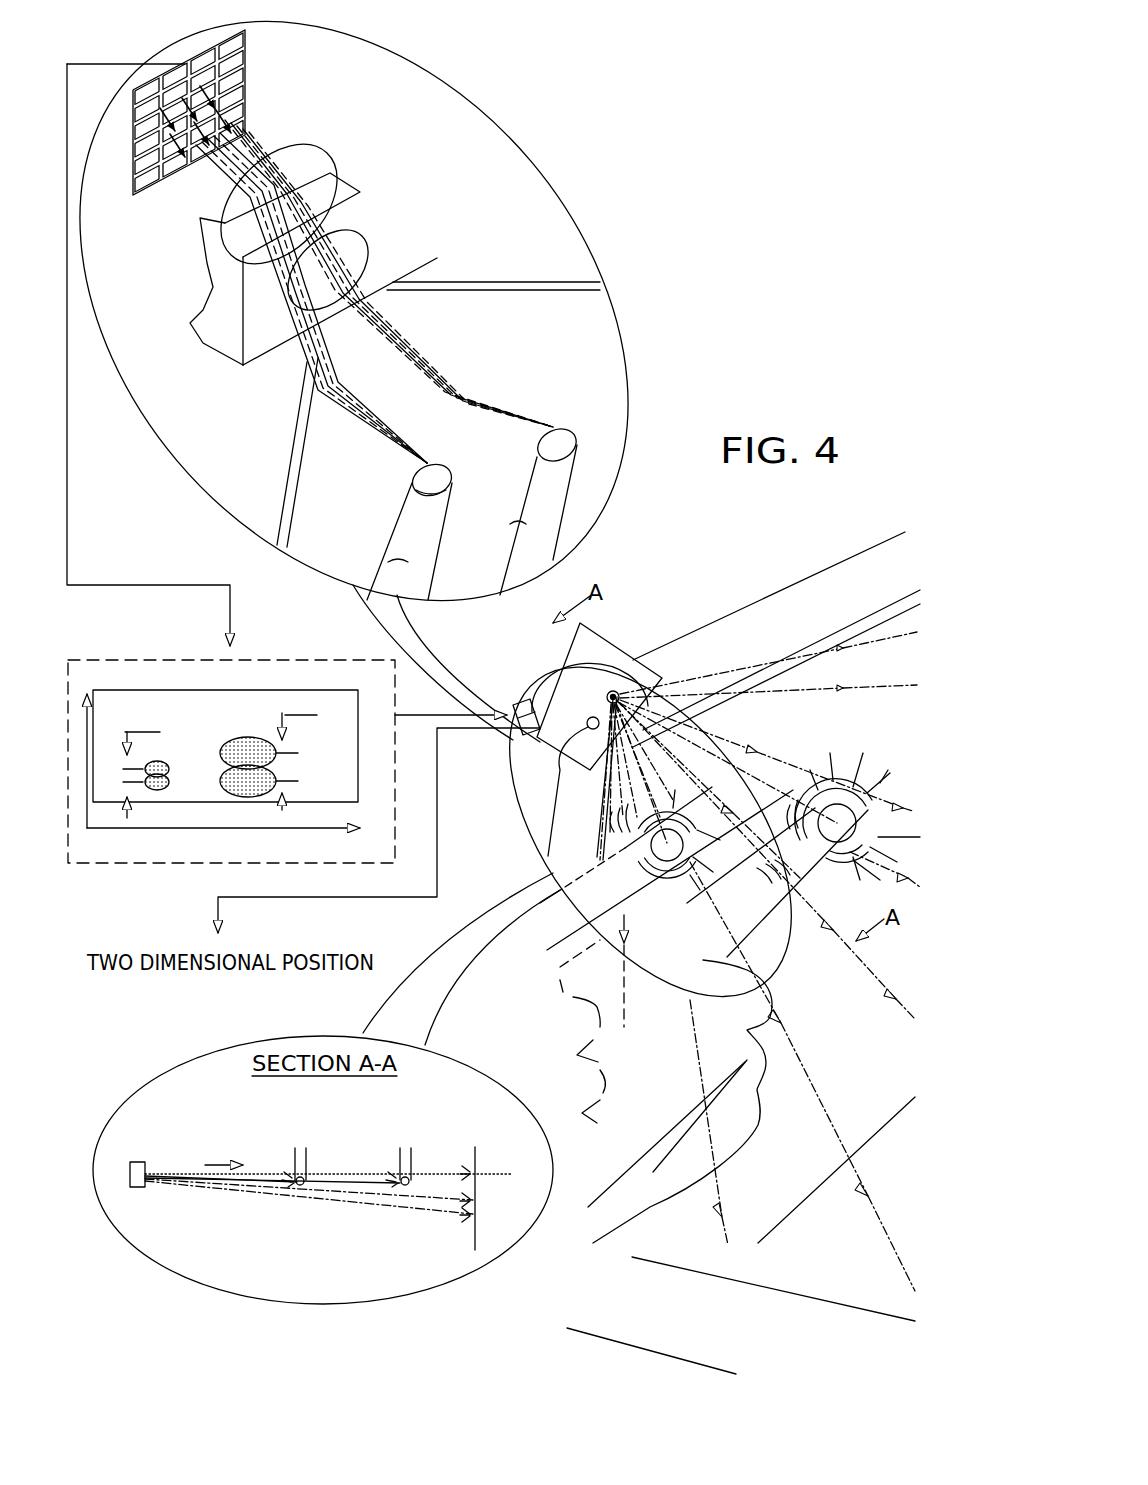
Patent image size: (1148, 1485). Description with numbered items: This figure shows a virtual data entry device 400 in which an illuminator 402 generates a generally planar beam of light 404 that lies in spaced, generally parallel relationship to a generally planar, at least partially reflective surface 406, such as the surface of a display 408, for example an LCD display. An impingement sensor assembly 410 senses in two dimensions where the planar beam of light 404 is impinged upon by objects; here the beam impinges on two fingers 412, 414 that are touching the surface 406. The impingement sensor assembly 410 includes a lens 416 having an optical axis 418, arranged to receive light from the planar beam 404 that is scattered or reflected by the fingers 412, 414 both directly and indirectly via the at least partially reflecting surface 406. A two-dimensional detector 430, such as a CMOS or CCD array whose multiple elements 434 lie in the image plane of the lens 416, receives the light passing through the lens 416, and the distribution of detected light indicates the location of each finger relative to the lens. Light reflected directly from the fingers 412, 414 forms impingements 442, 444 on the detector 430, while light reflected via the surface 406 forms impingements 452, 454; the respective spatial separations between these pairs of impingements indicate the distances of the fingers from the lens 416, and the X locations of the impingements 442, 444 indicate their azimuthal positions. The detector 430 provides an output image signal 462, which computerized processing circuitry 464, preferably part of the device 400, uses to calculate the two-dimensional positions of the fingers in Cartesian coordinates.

The virtual data entry device 400 is at (617, 625).
The illuminator 402 is at (620, 692).
The generally planar beam of light 404 is at (703, 677).
The at least partially reflective surface 406 is at (900, 627).
The display 408 is at (812, 590).
The impingement sensor assembly 410 is at (364, 146).
The finger 412 is at (530, 468).
The finger 414 is at (412, 508).
The lens 416 is at (228, 228).
The optical axis 418 is at (387, 345).
The two-dimensional detector 430 is at (246, 50).
The multiple elements 434 is at (143, 130).
The impingement 442 is at (250, 790).
The impingement 444 is at (157, 790).
The impingement 452 is at (246, 750).
The impingement 454 is at (170, 762).
The output image signal 462 is at (140, 690).
The computerized processing circuitry 464 is at (525, 705).